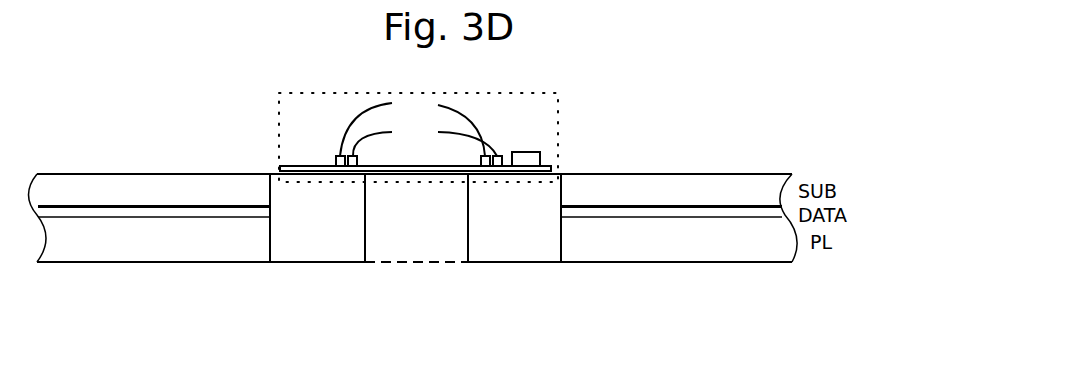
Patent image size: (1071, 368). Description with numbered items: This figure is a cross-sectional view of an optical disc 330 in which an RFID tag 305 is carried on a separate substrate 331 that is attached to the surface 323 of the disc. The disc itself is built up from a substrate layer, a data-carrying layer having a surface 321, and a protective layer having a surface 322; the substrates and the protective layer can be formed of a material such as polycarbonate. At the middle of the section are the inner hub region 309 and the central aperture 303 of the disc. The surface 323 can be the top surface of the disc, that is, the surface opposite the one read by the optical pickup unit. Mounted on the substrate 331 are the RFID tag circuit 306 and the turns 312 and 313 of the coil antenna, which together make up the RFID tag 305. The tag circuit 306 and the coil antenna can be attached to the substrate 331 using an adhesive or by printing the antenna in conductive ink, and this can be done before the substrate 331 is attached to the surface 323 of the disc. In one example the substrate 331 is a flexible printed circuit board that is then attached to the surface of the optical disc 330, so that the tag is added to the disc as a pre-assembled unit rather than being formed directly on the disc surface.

The optical disc 330 is at (128, 152).
The substrate 331 is at (295, 166).
The RFID tag 305 is at (462, 93).
The turn of the coil antenna 313 is at (413, 130).
The turn of the coil antenna 312 is at (425, 143).
The RFID tag circuit 306 is at (540, 152).
The surface 323 is at (705, 173).
The surface of the data-carrying layer 321 is at (705, 220).
The surface of the protective layer 322 is at (705, 265).
The central aperture 303 is at (416, 218).
The inner hub region 309 is at (475, 263).